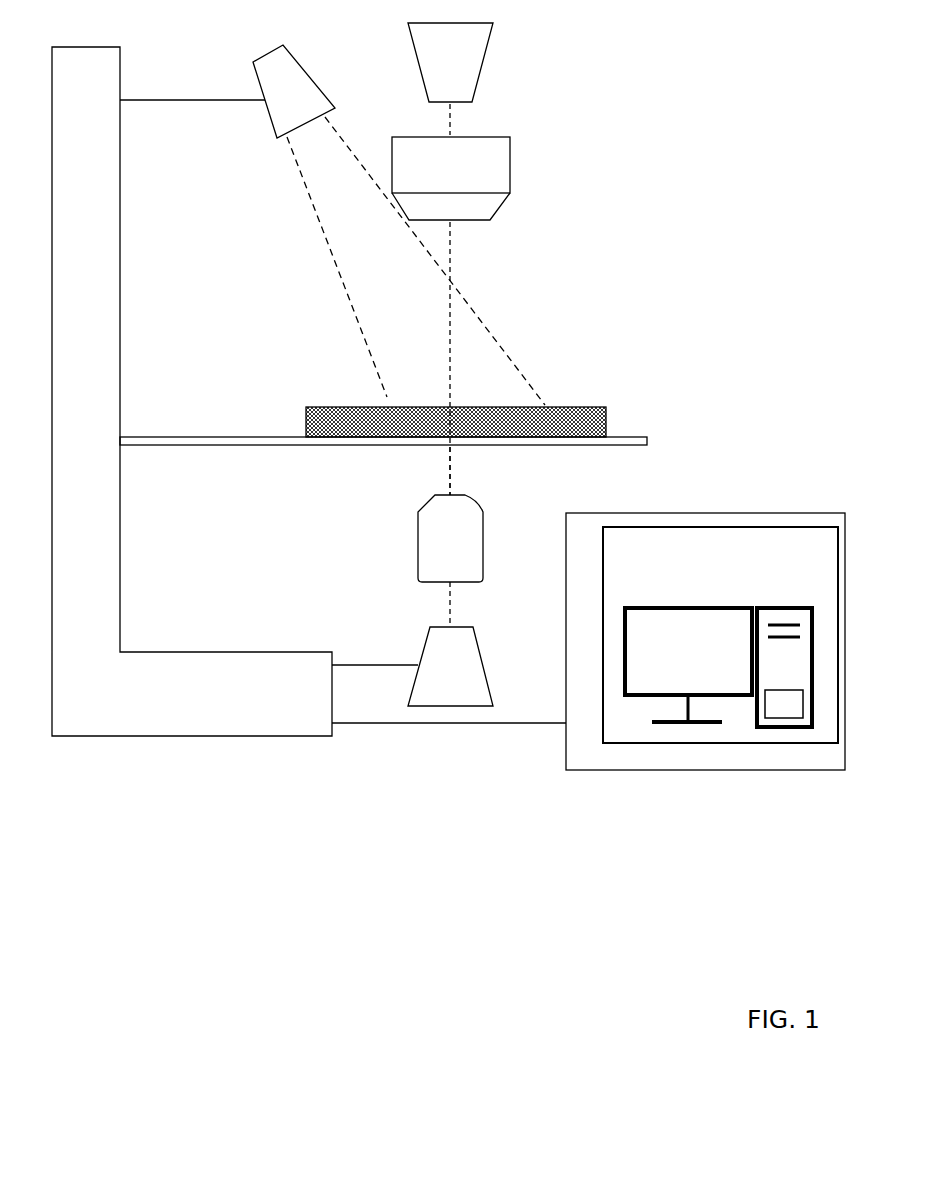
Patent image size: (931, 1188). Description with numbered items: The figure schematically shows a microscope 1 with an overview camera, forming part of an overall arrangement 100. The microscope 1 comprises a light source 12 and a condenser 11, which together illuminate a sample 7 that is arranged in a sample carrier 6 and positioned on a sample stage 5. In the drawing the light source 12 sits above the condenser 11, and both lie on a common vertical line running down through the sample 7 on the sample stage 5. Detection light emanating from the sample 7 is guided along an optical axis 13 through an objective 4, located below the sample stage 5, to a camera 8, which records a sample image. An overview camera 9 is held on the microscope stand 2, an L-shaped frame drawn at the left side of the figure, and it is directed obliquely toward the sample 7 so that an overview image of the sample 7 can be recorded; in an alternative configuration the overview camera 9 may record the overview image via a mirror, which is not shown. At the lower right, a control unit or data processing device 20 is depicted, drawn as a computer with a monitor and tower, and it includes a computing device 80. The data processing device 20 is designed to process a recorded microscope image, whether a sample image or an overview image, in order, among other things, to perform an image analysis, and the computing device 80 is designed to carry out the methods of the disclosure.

The microscope 1 is at (193, 47).
The measurement system 100 is at (705, 67).
The microscope stand 2 is at (103, 290).
The overview camera 9 is at (399, 225).
The light source 12 is at (450, 79).
The condenser 11 is at (495, 372).
The sample carrier 6 is at (483, 390).
The sample 7 is at (588, 403).
The sample stage 5 is at (648, 440).
The optical axis 13 is at (447, 453).
The objective 4 is at (450, 561).
The camera 8 is at (450, 666).
The control unit or data processing device 20 is at (705, 641).
The computing device 80 is at (784, 704).